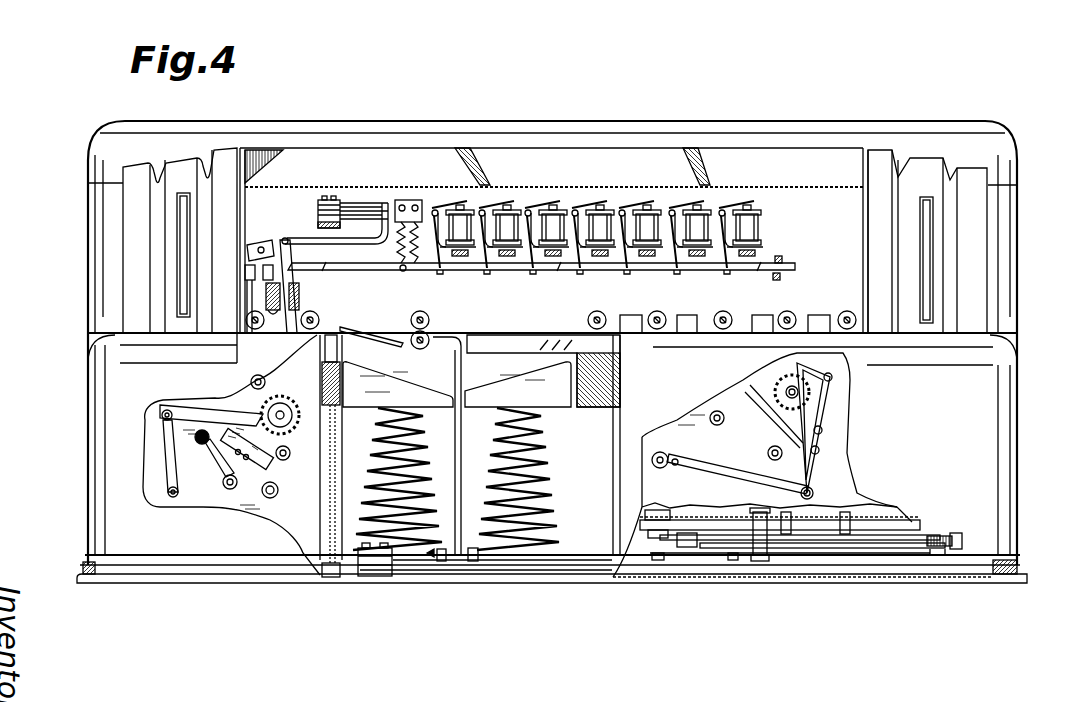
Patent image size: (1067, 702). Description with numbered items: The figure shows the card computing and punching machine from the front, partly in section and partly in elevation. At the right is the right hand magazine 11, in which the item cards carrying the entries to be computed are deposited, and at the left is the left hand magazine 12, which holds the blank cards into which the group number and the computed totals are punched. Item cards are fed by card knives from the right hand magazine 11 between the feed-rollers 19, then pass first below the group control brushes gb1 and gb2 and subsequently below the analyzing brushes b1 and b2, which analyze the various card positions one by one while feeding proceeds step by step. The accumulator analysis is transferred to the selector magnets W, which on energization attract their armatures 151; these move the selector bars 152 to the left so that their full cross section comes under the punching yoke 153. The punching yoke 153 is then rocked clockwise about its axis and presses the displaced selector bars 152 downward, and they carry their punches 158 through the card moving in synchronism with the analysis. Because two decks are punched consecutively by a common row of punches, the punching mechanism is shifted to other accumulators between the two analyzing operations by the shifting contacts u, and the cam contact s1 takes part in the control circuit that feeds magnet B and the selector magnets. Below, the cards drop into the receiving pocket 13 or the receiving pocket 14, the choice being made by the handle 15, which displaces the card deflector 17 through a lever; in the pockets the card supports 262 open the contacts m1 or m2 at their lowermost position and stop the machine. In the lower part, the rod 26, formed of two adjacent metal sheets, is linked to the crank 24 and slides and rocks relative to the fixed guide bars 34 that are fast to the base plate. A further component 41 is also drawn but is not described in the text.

The right hand magazine 11 is at (975, 238).
The left hand magazine 12 is at (133, 242).
The receiving pocket 13 is at (556, 548).
The receiving pocket 14 is at (347, 565).
The handle 15 is at (226, 488).
The card deflector 17 is at (367, 330).
The feed-rollers 19 is at (790, 323).
The crank 24 is at (657, 547).
The rod 26 is at (686, 547).
The guide bars 34 is at (808, 553).
The rod 41 is at (943, 549).
The armatures 151 is at (722, 204).
The selector bars 152 is at (786, 267).
The punching yoke 153 is at (253, 243).
The punches 158 is at (283, 323).
The card supports 262 is at (398, 387).
The shifting contacts u is at (363, 201).
The selector magnets W is at (516, 212).
The analyzing brush b1 is at (695, 314).
The analyzing brush b2 is at (642, 314).
The group control brush gb1 is at (830, 314).
The group control brush gb2 is at (772, 314).
The contact m1 is at (473, 561).
The contact m2 is at (431, 557).
The cam contact s1 is at (262, 468).